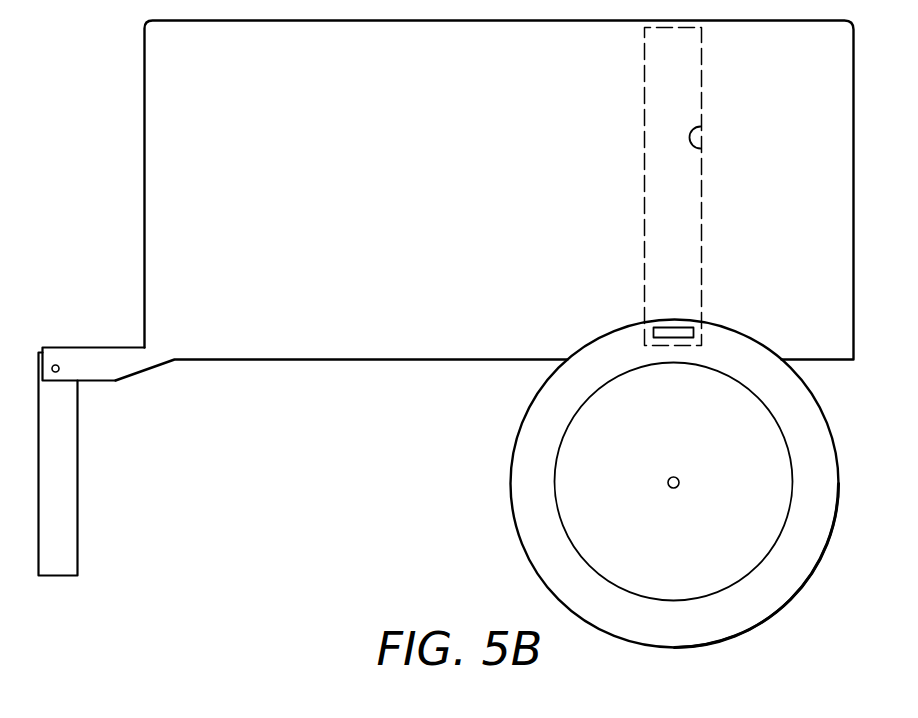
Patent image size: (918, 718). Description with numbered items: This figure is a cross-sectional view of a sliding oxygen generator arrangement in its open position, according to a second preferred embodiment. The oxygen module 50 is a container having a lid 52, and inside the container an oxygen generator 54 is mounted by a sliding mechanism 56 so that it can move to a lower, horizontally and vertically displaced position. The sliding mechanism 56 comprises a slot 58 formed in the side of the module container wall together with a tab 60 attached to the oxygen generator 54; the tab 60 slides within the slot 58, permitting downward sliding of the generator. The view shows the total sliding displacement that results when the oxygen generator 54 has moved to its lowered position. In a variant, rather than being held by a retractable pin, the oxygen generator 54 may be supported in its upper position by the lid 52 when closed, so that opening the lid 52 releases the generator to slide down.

The oxygen module 50 is at (142, 278).
The lid 52 is at (62, 468).
The oxygen generator 54 is at (580, 483).
The sliding mechanism 56 is at (638, 88).
The slot 58 is at (698, 146).
The tab 60 is at (680, 328).